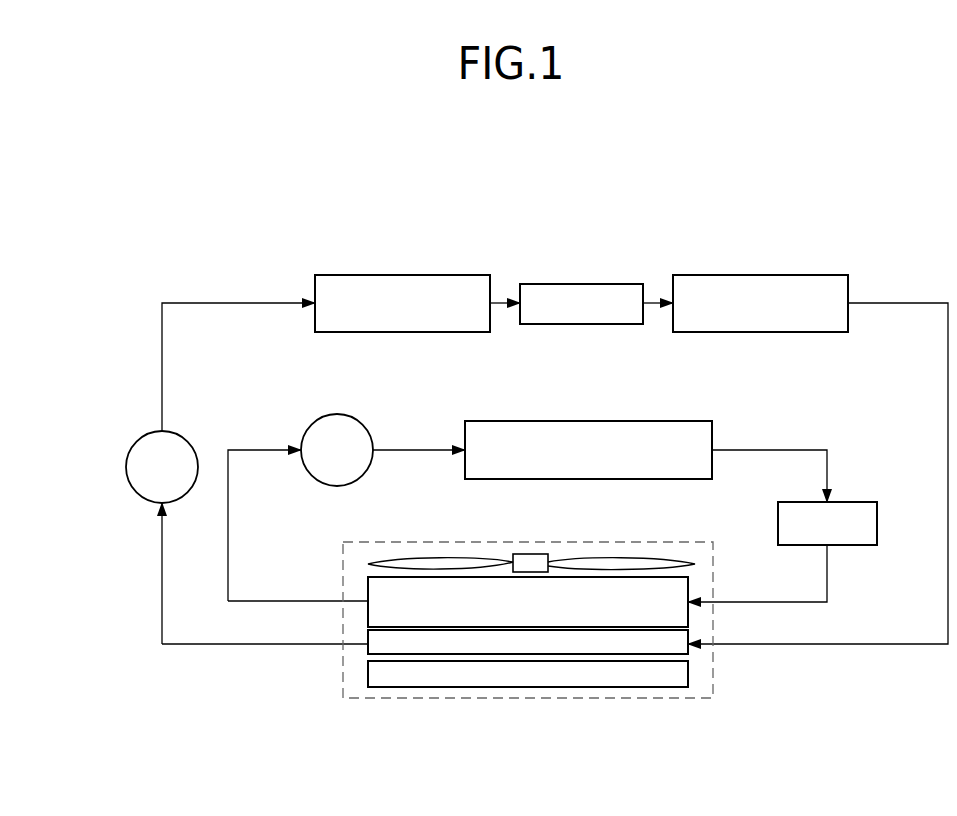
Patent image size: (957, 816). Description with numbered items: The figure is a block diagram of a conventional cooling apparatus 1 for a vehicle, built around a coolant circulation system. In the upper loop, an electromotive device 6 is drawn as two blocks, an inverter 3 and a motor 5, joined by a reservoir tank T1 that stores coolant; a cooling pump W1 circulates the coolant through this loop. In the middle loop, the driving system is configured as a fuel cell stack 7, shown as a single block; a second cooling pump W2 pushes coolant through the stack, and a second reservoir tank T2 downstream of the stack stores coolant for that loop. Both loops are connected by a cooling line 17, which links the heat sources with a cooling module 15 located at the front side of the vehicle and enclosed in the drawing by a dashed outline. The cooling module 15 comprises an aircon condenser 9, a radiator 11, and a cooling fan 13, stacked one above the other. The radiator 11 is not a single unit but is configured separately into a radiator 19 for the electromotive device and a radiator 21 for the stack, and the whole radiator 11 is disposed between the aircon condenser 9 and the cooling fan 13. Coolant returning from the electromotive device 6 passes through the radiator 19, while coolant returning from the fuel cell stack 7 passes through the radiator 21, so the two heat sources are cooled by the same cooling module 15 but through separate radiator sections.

The cooling apparatus 1 is at (698, 207).
The inverter 3 is at (460, 275).
The motor 5 is at (700, 275).
The electromotive device 6 is at (555, 167).
The fuel cell stack 7 is at (658, 421).
The aircon condenser 9 is at (368, 670).
The radiator 11 is at (231, 682).
The cooling fan 13 is at (368, 564).
The cooling module 15 is at (196, 652).
The cooling line 17 is at (228, 547).
The radiator for the electromotive device 19 is at (368, 648).
The radiator for a stack 21 is at (368, 610).
The reservoir tank T1 is at (580, 332).
The reservoir tank T2 is at (857, 502).
The cooling pump W1 is at (143, 441).
The cooling pump W2 is at (337, 414).